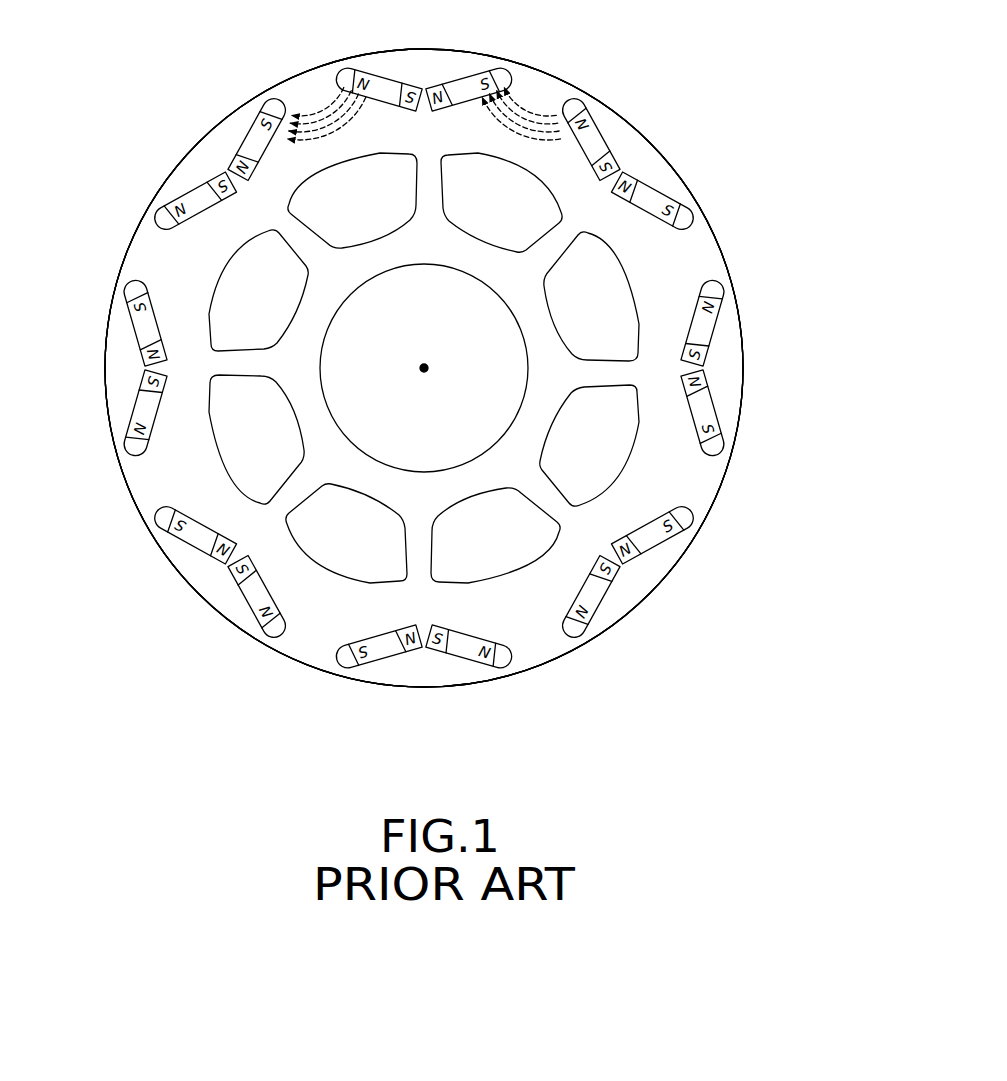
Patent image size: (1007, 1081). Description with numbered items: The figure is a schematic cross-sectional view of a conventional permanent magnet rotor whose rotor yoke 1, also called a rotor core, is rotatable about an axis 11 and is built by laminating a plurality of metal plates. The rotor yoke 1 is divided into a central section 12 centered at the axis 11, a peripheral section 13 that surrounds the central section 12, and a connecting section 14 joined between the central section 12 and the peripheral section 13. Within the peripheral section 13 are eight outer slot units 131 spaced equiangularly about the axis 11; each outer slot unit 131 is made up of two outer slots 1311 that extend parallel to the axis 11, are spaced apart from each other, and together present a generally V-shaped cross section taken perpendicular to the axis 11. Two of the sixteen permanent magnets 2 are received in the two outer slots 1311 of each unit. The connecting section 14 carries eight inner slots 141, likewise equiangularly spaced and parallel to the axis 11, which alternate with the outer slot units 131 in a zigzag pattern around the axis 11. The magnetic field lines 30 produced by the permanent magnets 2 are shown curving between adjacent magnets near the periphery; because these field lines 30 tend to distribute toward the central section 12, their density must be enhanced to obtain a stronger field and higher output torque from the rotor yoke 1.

The rotor yoke 1 is at (148, 557).
The permanent magnets 2 is at (587, 140).
The axis 11 is at (424, 368).
The central section 12 is at (427, 487).
The peripheral section 13 is at (543, 650).
The connecting section 14 is at (487, 607).
The magnetic field lines 30 is at (320, 112).
The outer slot units 131 is at (131, 366).
The inner slots 141 is at (257, 433).
The outer slots 1311 is at (158, 303).